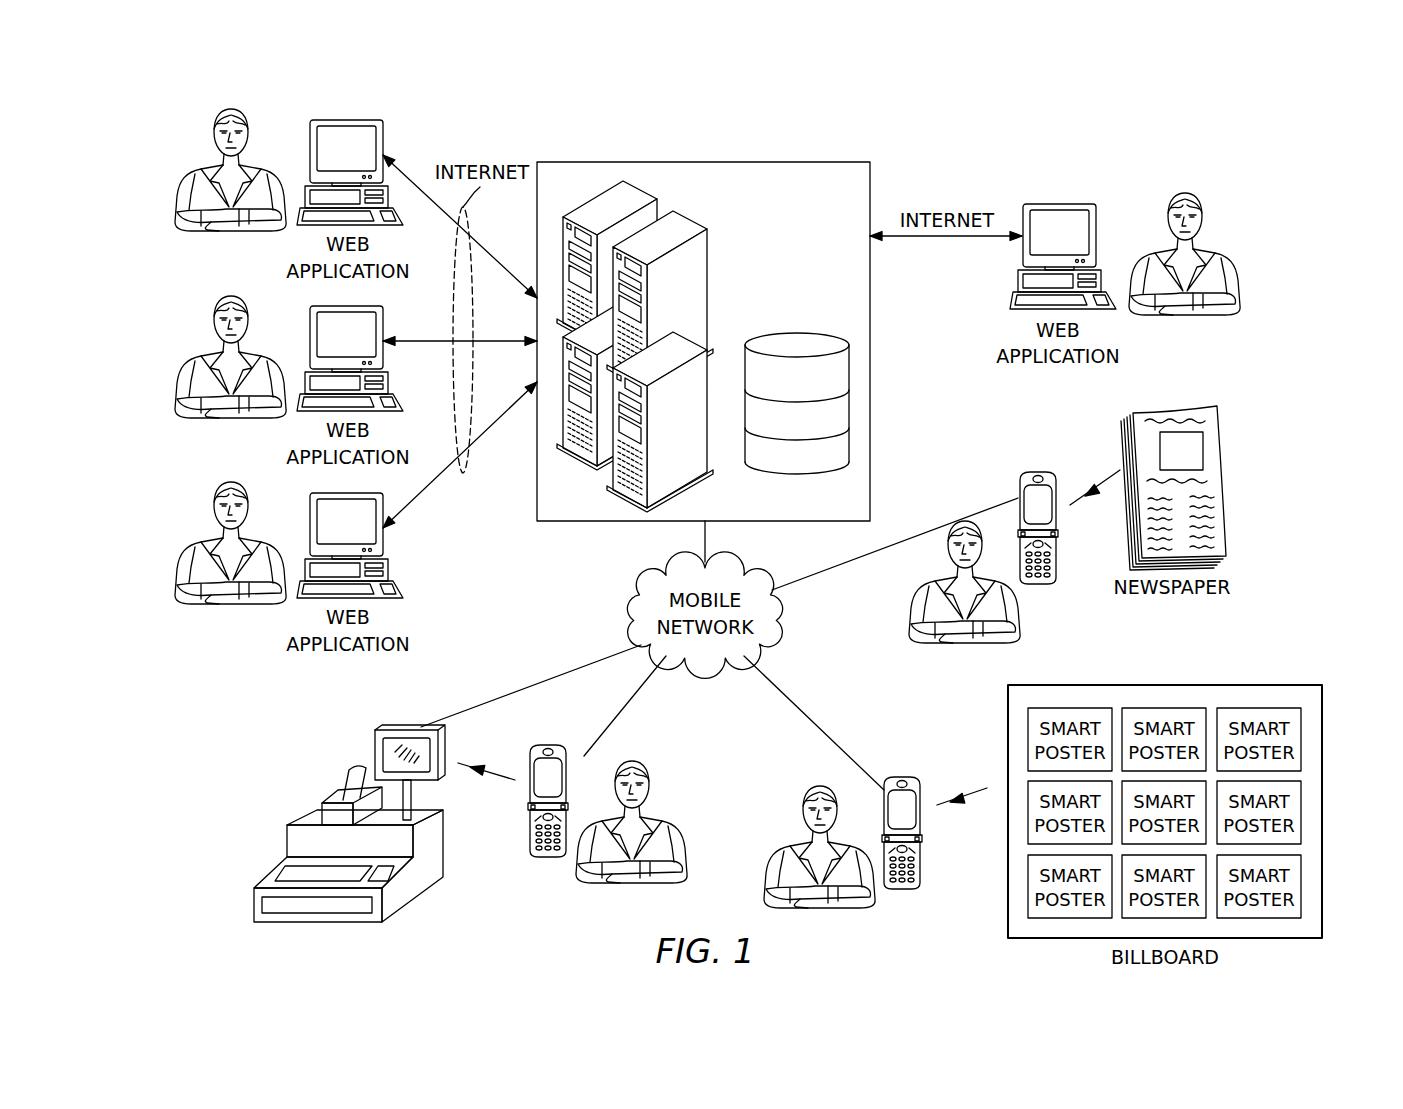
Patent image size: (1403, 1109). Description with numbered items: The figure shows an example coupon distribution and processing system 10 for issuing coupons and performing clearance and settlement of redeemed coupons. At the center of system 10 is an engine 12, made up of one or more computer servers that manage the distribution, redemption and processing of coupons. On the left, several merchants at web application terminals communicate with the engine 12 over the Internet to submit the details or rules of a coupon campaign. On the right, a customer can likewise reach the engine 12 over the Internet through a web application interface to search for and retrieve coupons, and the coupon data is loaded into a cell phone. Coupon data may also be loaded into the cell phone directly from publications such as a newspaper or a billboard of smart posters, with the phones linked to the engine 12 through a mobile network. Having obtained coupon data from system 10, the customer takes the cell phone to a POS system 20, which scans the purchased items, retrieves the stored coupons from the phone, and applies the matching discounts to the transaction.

The coupon distribution and processing system 10 is at (1010, 145).
The engine 12 is at (785, 276).
The POS system 20 is at (285, 843).